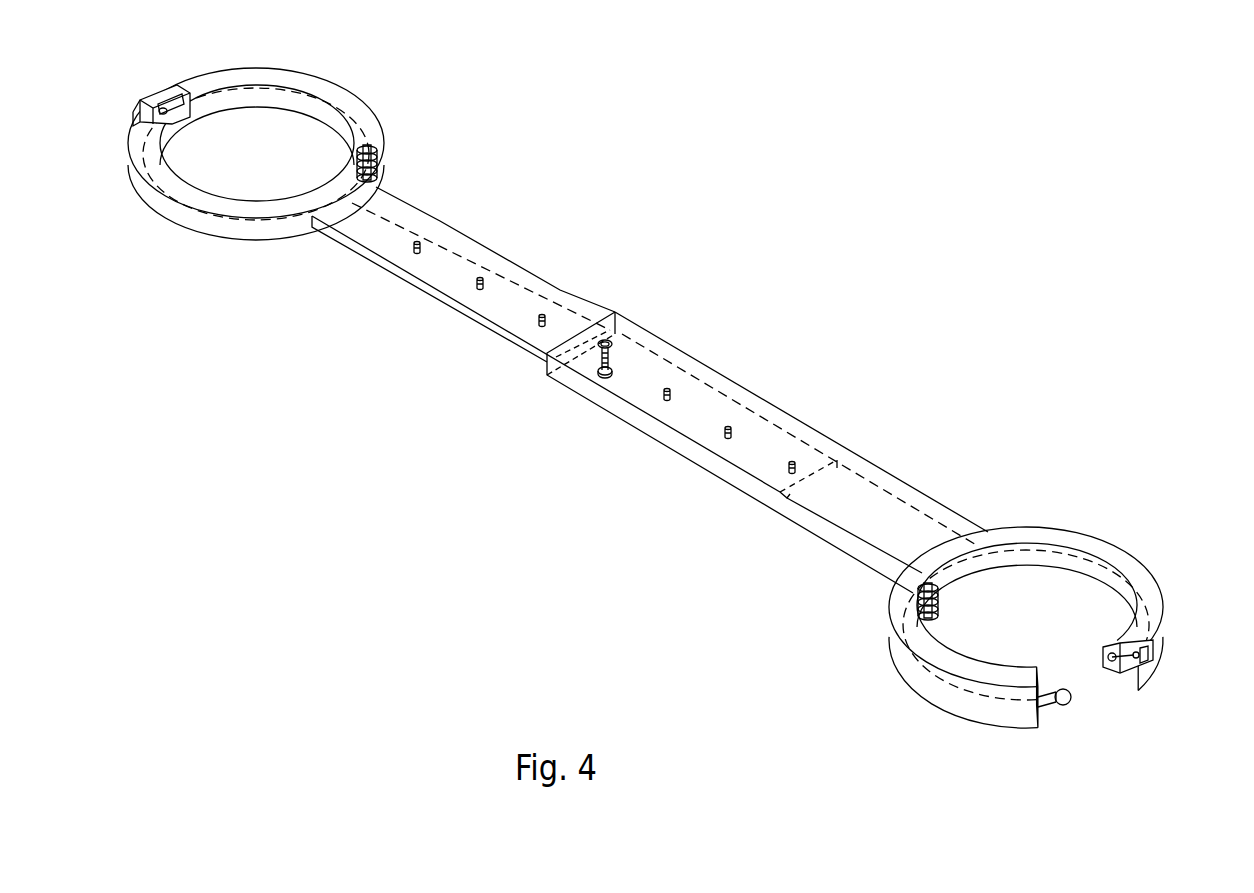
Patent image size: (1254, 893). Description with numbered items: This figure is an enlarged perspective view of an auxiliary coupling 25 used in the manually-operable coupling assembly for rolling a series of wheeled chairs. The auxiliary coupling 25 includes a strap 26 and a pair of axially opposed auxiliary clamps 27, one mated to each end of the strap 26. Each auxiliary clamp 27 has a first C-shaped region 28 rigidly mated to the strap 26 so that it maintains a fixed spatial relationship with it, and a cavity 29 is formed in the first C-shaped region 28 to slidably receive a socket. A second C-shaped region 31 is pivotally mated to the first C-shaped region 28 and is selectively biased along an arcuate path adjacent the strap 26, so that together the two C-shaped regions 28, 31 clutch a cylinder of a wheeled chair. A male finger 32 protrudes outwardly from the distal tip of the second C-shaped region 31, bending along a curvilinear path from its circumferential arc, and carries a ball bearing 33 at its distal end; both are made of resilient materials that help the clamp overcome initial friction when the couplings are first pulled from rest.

The auxiliary coupling 25 is at (653, 293).
The strap 26 is at (668, 350).
The auxiliary clamp 27 is at (327, 87).
The first C-shaped region 28 is at (1140, 570).
The cavity 29 is at (1113, 682).
The second C-shaped region 31 is at (918, 690).
The male finger 32 is at (1045, 708).
The ball bearing 33 is at (1066, 706).